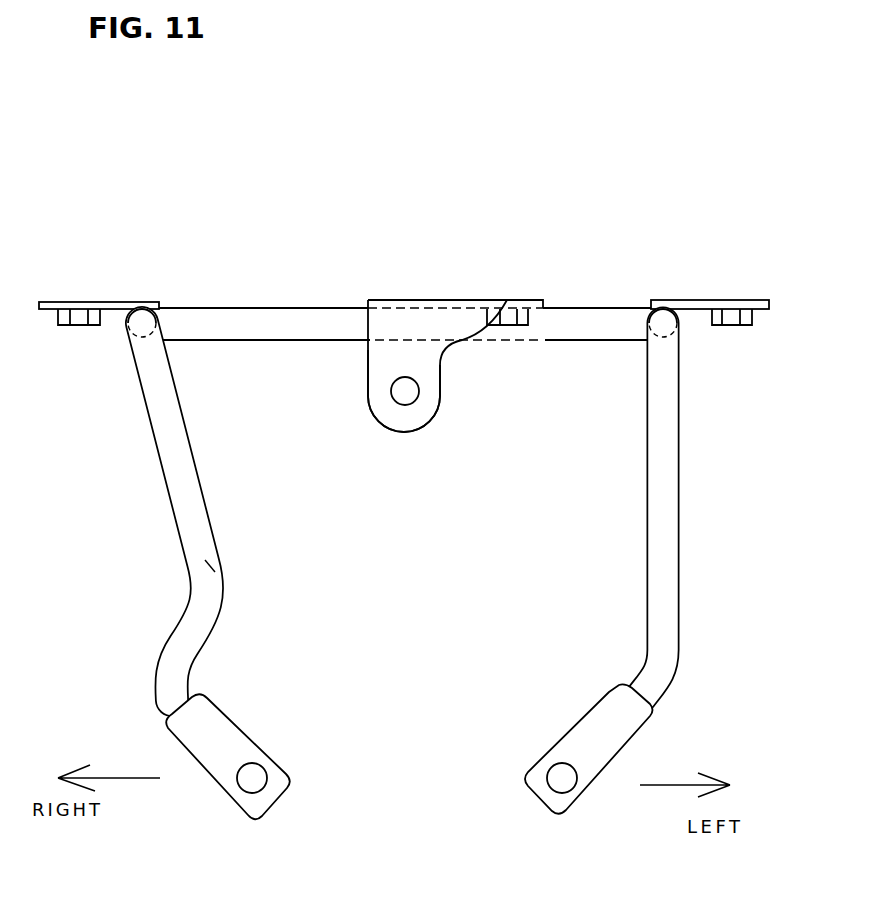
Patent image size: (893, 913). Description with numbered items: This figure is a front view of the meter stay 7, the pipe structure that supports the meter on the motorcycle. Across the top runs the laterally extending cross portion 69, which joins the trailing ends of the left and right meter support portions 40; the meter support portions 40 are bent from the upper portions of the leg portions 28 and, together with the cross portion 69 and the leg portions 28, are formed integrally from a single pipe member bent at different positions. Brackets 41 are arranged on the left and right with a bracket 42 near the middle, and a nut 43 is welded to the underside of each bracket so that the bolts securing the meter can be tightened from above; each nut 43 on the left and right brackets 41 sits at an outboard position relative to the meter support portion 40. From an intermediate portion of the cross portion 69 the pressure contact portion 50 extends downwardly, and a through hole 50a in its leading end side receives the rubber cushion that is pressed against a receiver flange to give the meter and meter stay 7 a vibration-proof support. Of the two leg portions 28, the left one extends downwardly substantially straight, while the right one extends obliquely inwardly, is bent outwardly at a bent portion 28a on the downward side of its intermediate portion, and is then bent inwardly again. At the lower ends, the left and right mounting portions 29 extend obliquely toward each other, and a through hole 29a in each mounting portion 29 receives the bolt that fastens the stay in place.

The meter stay 7 is at (210, 243).
The cross portion 69 is at (280, 307).
The bracket 41 is at (63, 302).
The bracket 42 is at (520, 300).
The pressure contact portion 50 is at (378, 352).
The through hole 50a is at (405, 393).
The nut 43 is at (78, 327).
The leg portion 28 is at (170, 463).
The bent portion 28a is at (218, 565).
The meter support portion 40 is at (130, 323).
The mounting portion 29 is at (222, 725).
The through hole 29a is at (250, 786).